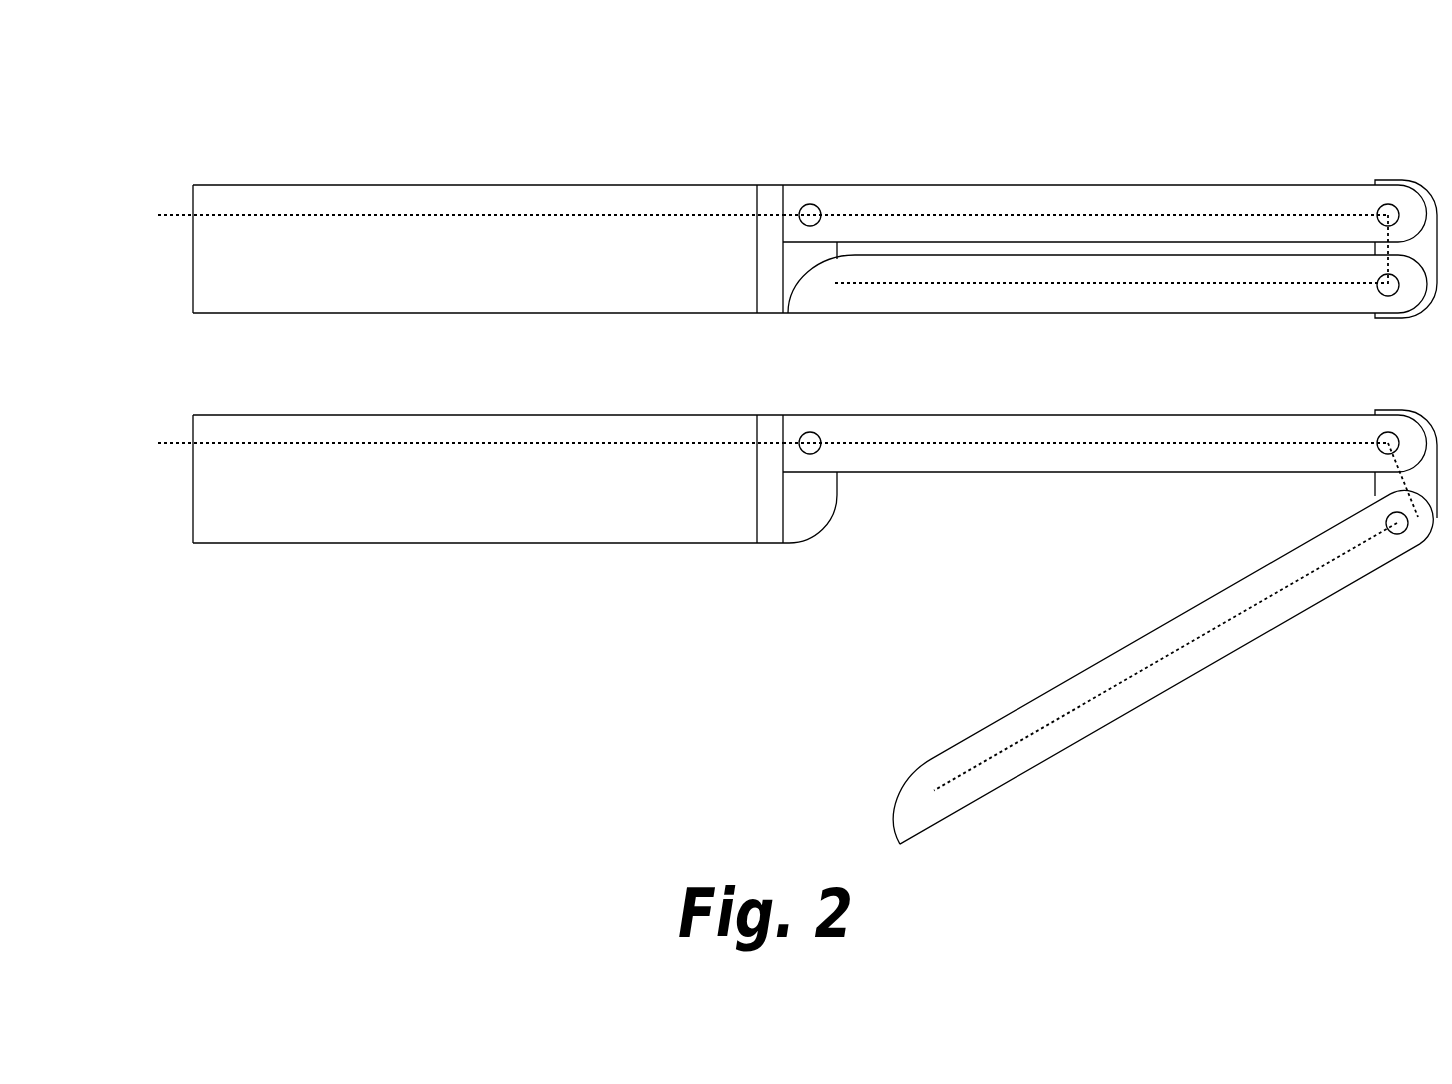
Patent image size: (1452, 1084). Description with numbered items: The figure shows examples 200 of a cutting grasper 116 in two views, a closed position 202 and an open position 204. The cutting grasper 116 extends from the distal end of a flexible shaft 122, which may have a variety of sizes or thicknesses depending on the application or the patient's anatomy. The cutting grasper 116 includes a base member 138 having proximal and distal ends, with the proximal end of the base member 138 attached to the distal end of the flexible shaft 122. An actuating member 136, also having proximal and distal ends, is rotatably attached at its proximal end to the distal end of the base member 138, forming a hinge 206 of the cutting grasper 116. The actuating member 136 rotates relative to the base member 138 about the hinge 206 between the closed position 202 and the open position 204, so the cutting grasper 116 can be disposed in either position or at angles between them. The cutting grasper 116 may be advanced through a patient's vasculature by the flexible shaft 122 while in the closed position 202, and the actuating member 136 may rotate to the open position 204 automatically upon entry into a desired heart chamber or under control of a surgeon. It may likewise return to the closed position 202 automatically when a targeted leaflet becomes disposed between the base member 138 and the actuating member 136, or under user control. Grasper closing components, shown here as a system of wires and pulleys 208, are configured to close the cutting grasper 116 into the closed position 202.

The examples of the cutting grasper 200 is at (163, 68).
The closed position 202 is at (167, 155).
The open position 204 is at (170, 392).
The flexible shaft 122 is at (530, 185).
The cutting grasper 116 is at (1433, 150).
The base member 138 is at (1076, 432).
The actuating member 136 is at (1018, 727).
The hinge 206 is at (1387, 484).
The system of wires and pulleys 208 is at (583, 443).